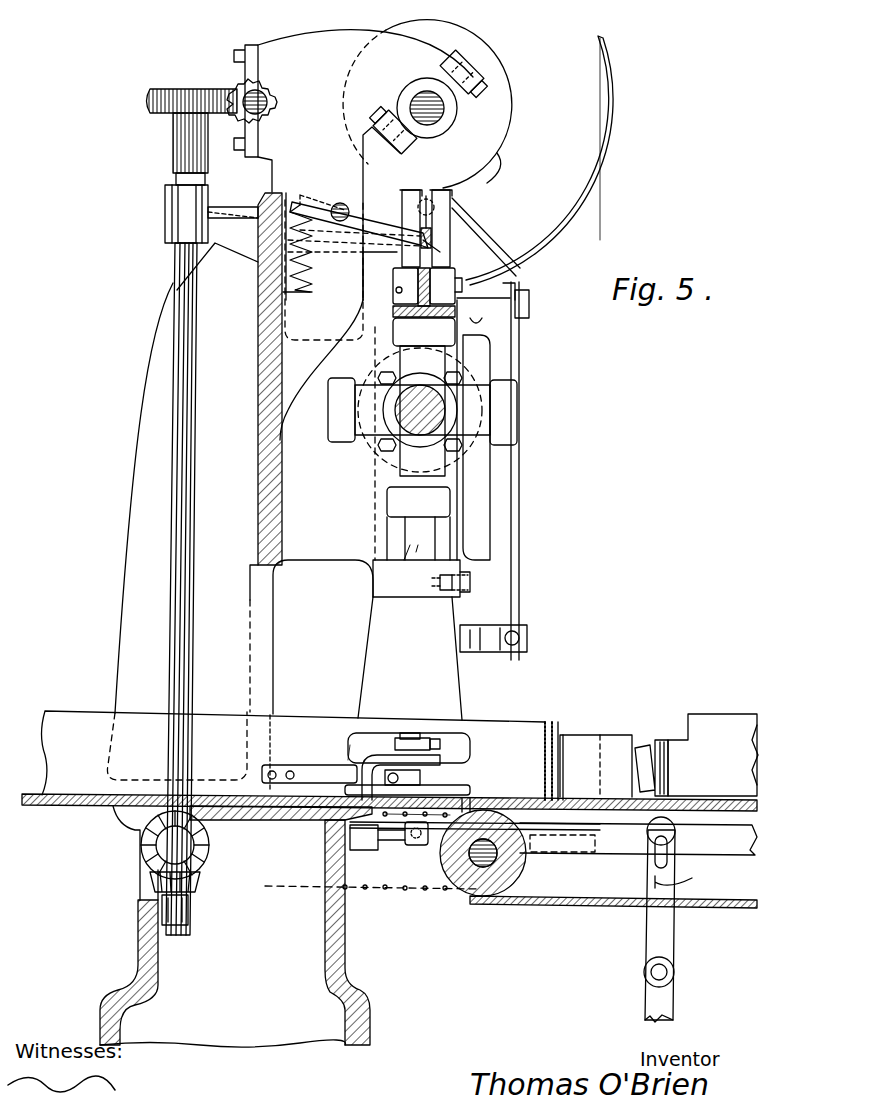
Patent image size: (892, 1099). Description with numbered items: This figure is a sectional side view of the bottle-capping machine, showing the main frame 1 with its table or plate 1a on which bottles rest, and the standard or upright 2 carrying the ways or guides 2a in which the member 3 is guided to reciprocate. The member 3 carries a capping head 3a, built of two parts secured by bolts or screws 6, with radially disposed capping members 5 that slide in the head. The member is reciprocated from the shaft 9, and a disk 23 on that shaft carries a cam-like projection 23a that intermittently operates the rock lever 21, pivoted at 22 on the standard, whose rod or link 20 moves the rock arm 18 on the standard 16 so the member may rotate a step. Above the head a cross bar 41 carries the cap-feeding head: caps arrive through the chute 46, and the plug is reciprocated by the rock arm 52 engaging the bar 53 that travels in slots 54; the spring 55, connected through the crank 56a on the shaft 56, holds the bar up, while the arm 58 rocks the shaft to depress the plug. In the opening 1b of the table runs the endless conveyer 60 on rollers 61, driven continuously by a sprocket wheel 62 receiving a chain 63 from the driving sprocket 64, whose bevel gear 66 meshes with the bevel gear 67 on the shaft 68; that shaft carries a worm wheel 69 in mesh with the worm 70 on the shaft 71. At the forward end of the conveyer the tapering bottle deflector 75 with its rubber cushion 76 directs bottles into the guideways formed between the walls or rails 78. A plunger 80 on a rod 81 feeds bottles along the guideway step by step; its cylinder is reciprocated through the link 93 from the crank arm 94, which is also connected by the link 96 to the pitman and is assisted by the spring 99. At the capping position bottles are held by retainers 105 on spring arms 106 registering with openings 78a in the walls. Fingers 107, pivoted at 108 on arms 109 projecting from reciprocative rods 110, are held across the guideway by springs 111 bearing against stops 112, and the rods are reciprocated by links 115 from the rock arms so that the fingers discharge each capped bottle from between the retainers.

The main frame 1 is at (346, 938).
The table or plate 1a is at (62, 826).
The opening in table 1b is at (464, 802).
The standards or uprights 2 is at (128, 513).
The ways or guides 2a is at (372, 545).
The member 3 is at (422, 411).
The capping head 3a is at (370, 374).
The capping members 5 is at (540, 414).
The bolts or screws 6 is at (395, 382).
The shaft 9 is at (445, 118).
The standard 16 is at (410, 658).
The rock arm 18 is at (493, 648).
The rod or link 20 is at (522, 492).
The rock lever 21 is at (492, 262).
The pivot 22 is at (530, 316).
The disk 23 is at (508, 118).
The cam-like projection 23a is at (500, 182).
The cross bar 41 is at (412, 284).
The chute 46 is at (580, 234).
The rock arm or lever 52 is at (372, 222).
The bar 53 is at (439, 228).
The slots 54 is at (430, 196).
The spring 55 is at (306, 248).
The shaft 56 is at (341, 202).
The crank 56a is at (305, 198).
The arm 58 is at (375, 276).
The endless conveyer 60 is at (518, 806).
The rollers 61 is at (528, 862).
The sprocket wheel 62 is at (440, 860).
The chain 63 is at (372, 864).
The driving sprocket 64 is at (205, 862).
The bevel gear 66 is at (150, 858).
The bevel gear 67 is at (190, 905).
The shaft 68 is at (190, 671).
The worm wheel 69 is at (152, 113).
The worm 70 is at (278, 116).
The shaft 71 is at (270, 92).
The bottle deflector 75 is at (566, 736).
The cushion 76 is at (556, 730).
The walls or rails 78 is at (62, 710).
The openings in walls 78a is at (470, 748).
The plunger 80 is at (587, 766).
The rod 81 is at (650, 748).
The link 93 is at (638, 839).
The crank arm 94 is at (676, 938).
The link 96 is at (676, 968).
The spring 99 is at (692, 878).
The retainers 105 is at (408, 780).
The spring arms 106 is at (309, 752).
The fingers 107 is at (395, 744).
The pivot 108 is at (416, 736).
The arms 109 is at (332, 742).
The reciprocative rods 110 is at (372, 850).
The springs 111 is at (440, 744).
The stops 112 is at (408, 777).
The links 115 is at (579, 840).